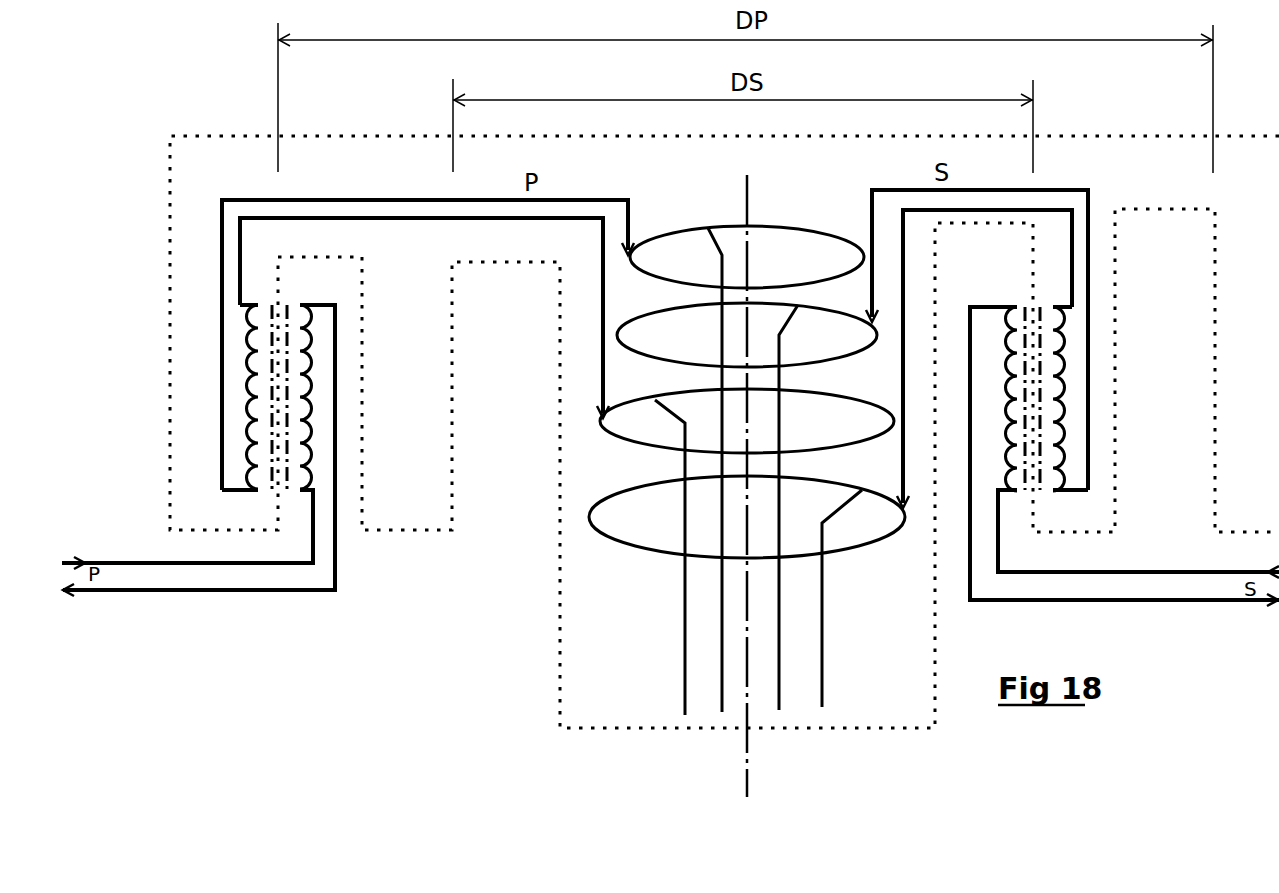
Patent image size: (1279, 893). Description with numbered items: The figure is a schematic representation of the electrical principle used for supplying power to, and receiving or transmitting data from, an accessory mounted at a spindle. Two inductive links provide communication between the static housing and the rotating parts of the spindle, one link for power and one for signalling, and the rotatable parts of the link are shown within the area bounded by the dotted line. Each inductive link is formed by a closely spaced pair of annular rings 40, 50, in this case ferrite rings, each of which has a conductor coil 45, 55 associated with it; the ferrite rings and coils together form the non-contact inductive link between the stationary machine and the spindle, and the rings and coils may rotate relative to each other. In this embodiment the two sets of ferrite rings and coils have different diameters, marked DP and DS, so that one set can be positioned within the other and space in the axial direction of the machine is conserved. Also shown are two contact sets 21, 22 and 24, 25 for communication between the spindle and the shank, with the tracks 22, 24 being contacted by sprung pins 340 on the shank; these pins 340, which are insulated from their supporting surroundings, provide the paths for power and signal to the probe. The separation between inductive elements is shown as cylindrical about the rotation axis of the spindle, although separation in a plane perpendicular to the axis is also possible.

The contact set conductor 21 is at (872, 208).
The track 22 is at (819, 360).
The track 24 is at (628, 258).
The contact set conductor 25 is at (631, 212).
The annular ring 40 is at (271, 302).
The conductor coil 45 is at (255, 370).
The annular ring 50 is at (290, 302).
The conductor coil 55 is at (306, 383).
The sprung pins 340 is at (687, 658).